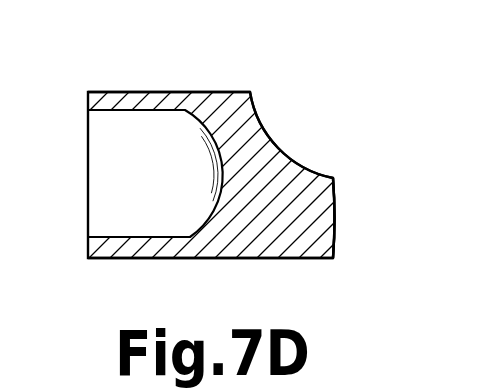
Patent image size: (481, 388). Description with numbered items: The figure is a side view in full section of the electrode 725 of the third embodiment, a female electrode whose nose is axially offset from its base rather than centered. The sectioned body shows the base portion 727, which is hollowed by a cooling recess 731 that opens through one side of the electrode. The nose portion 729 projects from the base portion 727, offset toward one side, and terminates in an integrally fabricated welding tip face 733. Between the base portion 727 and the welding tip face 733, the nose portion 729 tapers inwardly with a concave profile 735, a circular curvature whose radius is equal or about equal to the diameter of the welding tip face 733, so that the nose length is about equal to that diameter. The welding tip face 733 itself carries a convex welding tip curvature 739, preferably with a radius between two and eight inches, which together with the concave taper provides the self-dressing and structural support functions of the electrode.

The electrode 725 is at (187, 69).
The base portion 727 is at (237, 91).
The nose portion 729 is at (298, 260).
The cooling recess 731 is at (113, 183).
The welding tip face 733 is at (337, 190).
The concave profile 735 is at (278, 157).
The convex welding tip curvature 739 is at (338, 219).